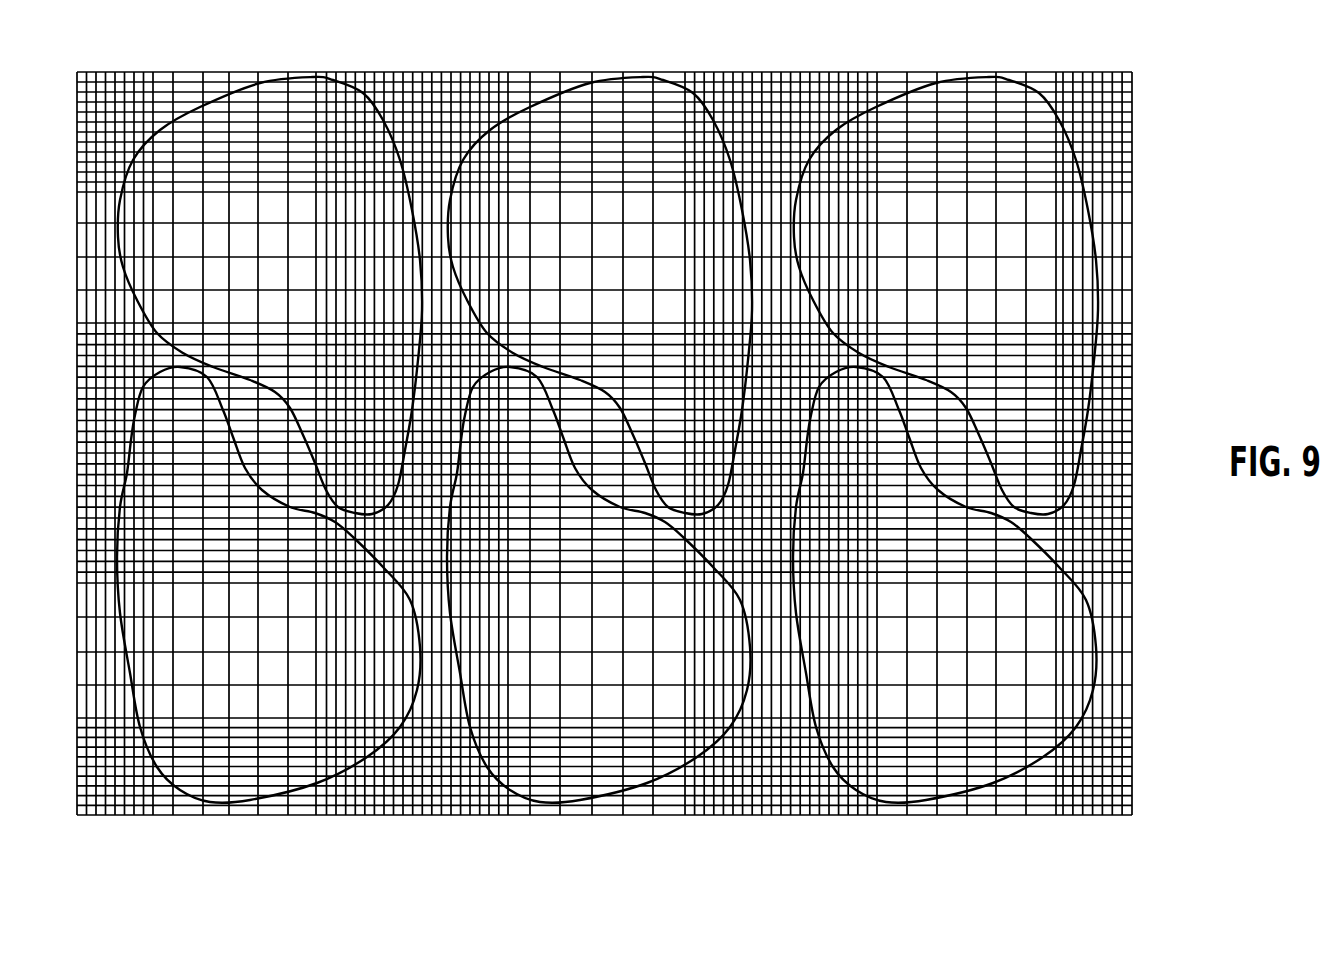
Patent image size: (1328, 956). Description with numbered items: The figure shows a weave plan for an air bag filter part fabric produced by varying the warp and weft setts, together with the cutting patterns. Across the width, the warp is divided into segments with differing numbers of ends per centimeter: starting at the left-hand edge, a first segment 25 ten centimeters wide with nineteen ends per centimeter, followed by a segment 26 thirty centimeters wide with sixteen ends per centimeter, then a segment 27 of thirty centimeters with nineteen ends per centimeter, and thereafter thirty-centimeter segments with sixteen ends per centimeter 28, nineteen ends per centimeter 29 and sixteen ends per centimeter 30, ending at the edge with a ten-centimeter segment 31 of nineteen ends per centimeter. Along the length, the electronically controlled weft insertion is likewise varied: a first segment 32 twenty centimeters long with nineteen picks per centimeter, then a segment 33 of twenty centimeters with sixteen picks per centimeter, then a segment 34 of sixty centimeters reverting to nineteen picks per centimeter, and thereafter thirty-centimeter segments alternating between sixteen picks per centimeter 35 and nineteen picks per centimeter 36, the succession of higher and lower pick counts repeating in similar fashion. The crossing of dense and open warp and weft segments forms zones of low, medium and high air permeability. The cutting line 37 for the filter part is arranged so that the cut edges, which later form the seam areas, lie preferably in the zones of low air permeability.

The cutting line 37 is at (320, 77).
The first warp segment 25 is at (80, 822).
The second warp segment 26 is at (315, 822).
The third warp segment 27 is at (498, 822).
The fourth warp segment 28 is at (687, 822).
The fifth warp segment 29 is at (880, 822).
The sixth warp segment 30 is at (1060, 822).
The edge warp segment 31 is at (1133, 822).
The first weft segment 32 is at (1197, 813).
The second weft segment 33 is at (1197, 718).
The third weft segment 34 is at (1197, 585).
The low-pick weft segment 35 is at (1197, 326).
The high-pick weft segment 36 is at (1143, 78).